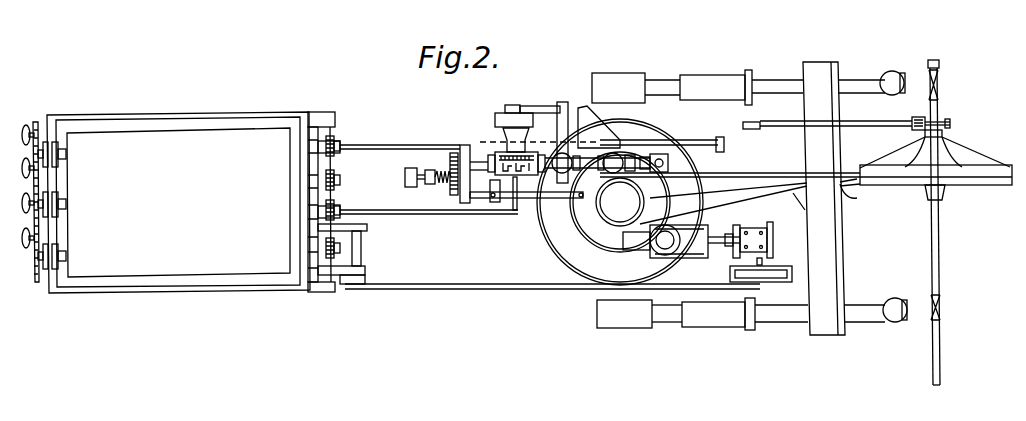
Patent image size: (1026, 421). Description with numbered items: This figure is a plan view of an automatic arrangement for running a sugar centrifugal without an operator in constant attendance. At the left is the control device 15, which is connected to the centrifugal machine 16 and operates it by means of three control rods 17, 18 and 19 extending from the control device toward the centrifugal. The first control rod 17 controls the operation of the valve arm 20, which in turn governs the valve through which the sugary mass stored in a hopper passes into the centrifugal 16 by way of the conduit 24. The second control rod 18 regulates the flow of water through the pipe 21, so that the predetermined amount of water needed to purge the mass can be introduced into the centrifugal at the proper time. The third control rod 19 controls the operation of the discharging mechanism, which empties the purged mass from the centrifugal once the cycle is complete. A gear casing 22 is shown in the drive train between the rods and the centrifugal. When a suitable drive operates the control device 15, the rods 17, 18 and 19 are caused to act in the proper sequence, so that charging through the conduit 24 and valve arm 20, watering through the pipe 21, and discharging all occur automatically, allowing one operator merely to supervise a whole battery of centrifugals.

The control device 15 is at (178, 202).
The centrifugal machine 16 is at (572, 241).
The control rod 17 is at (386, 290).
The control rod 18 is at (418, 201).
The control rod 19 is at (377, 145).
The valve arm 20 is at (692, 240).
The pipe 21 is at (724, 151).
The gear casing 22 is at (497, 154).
The conduit 24 is at (668, 248).